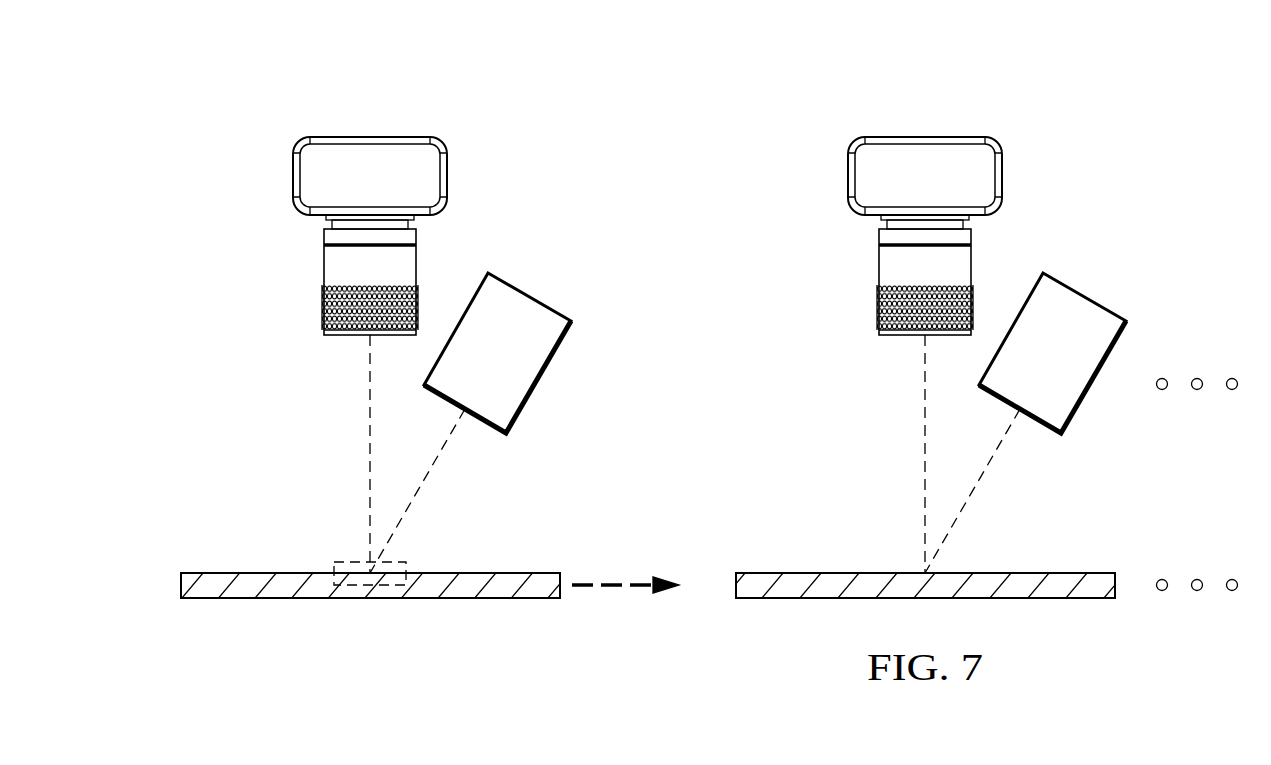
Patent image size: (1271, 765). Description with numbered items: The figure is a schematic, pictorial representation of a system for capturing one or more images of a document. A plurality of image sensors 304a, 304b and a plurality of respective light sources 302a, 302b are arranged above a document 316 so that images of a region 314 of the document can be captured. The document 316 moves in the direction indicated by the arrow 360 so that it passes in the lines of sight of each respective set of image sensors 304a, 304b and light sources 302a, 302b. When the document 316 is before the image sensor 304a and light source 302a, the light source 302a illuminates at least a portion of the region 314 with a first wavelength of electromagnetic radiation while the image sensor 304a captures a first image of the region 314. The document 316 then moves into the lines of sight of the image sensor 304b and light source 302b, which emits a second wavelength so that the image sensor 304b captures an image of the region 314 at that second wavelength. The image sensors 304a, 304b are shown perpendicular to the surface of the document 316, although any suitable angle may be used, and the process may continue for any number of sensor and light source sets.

The image sensor 304a is at (357, 133).
The image sensor 304b is at (937, 133).
The light source 302a is at (539, 301).
The light source 302b is at (1094, 301).
The region 314 is at (406, 570).
The document 316 is at (345, 598).
The arrow 360 is at (612, 588).